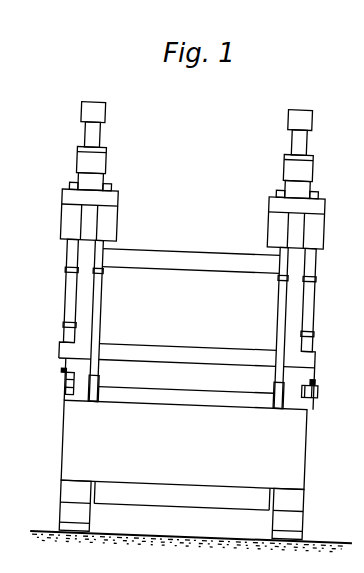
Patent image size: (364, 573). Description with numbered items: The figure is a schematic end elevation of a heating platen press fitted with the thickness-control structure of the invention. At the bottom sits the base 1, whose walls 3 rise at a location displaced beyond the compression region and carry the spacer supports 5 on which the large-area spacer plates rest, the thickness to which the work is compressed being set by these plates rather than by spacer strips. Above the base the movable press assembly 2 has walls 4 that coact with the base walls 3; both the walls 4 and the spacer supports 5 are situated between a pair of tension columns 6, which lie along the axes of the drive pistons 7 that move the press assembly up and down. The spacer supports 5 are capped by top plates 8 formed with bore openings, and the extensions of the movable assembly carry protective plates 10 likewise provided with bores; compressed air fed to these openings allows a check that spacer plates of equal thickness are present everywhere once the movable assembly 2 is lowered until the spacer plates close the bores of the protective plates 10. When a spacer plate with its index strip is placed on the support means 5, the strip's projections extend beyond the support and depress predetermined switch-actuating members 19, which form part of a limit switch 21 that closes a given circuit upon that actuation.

The base frame 1 is at (145, 466).
The movable press assembly 2 is at (257, 294).
The wall of the base unit 3 is at (82, 450).
The wall of the movable press assembly 4 is at (71, 303).
The spacer support 5 is at (70, 398).
The tension column 6 is at (72, 365).
The drive piston 7 is at (65, 258).
The top plate of the spacer support 8 is at (64, 379).
The protective plate 10 is at (62, 349).
The switch-actuating member 19 is at (316, 376).
The limit switch 21 is at (320, 387).